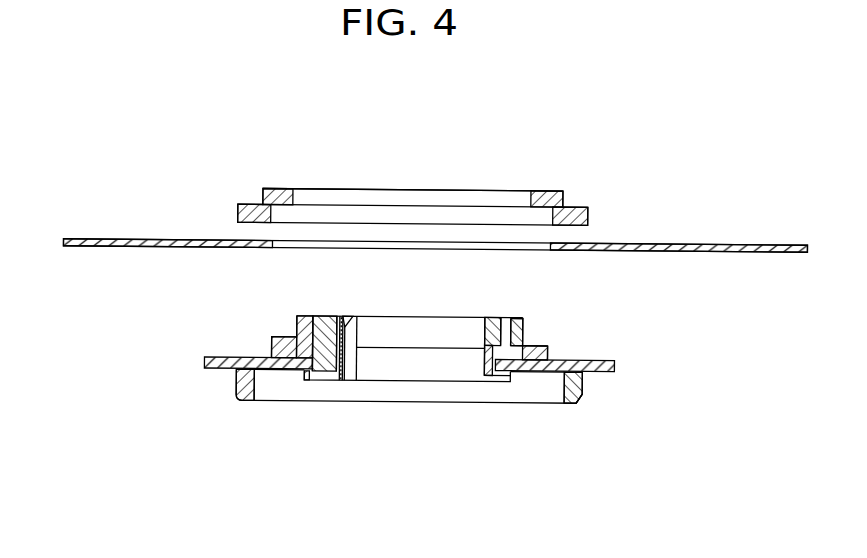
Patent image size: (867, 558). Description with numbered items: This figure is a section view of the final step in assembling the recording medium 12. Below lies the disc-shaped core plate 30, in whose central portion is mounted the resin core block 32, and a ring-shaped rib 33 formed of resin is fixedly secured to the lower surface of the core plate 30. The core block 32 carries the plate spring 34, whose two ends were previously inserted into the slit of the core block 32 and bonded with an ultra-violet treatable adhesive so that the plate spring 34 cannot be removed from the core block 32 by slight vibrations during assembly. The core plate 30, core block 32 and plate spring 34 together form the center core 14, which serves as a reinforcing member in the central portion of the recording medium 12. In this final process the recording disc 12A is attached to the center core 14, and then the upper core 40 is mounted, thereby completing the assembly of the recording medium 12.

The recording medium 12 is at (603, 162).
The recording disc 12A is at (708, 240).
The upper core 40 is at (566, 209).
The center core 14 is at (539, 337).
The plate spring 34 is at (346, 318).
The core block 32 is at (549, 350).
The core plate 30 is at (612, 373).
The ring-shaped rib 33 is at (574, 406).